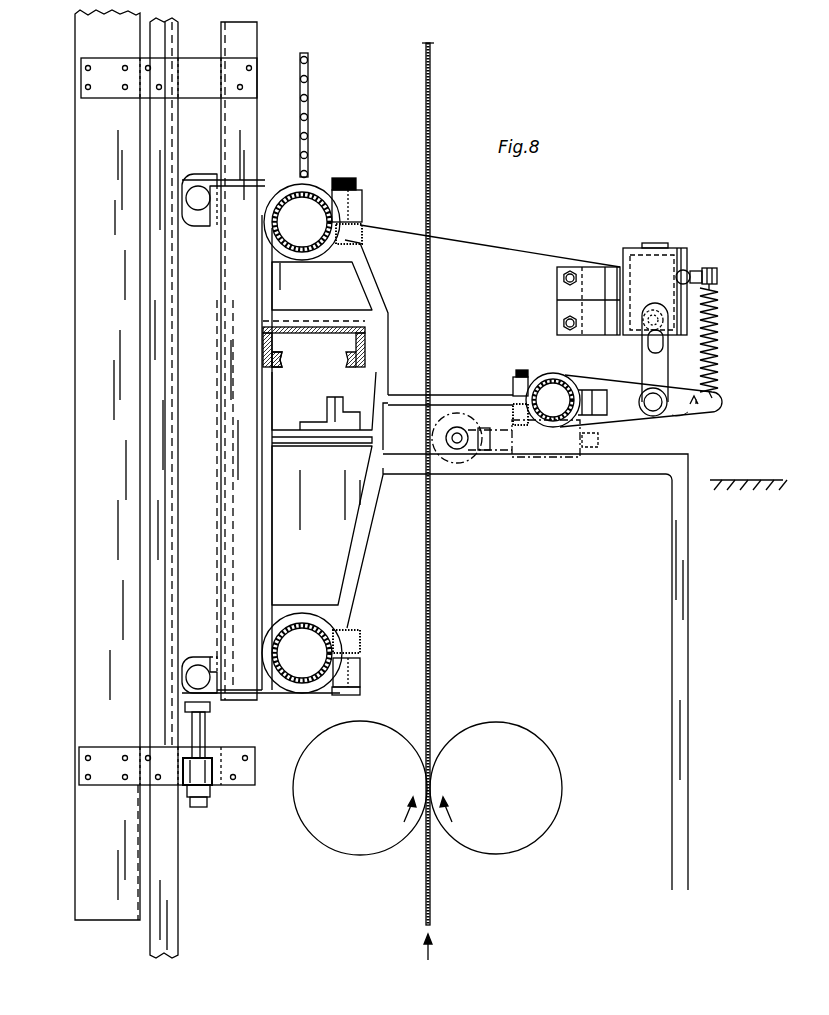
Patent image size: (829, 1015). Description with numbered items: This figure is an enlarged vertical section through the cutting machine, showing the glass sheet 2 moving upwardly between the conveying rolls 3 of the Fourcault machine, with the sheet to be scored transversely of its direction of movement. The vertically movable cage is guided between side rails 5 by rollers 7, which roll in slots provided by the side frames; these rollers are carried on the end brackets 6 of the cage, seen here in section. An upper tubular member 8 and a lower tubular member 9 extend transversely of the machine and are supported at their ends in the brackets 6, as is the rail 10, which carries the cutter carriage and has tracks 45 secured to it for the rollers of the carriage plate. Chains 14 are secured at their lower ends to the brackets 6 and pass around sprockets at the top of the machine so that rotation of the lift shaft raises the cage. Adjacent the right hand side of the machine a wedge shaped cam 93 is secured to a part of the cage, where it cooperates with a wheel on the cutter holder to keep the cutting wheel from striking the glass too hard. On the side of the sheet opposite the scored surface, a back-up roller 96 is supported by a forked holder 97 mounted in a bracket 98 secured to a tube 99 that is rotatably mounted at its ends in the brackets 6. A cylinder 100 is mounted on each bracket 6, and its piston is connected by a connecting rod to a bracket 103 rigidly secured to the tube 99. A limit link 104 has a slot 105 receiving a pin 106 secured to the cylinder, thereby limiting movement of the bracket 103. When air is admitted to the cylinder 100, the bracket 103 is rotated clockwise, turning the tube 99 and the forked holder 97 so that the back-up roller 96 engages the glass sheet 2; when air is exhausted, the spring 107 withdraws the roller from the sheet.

The glass sheet 2 is at (430, 592).
The conveying rolls 3 is at (295, 790).
The side rails 5 is at (170, 140).
The end brackets 6 is at (366, 562).
The rollers 7 is at (204, 182).
The upper tubular member 8 is at (308, 200).
The lower tubular member 9 is at (306, 676).
The rail 10 is at (323, 333).
The chains 14 is at (306, 112).
The tracks 45 is at (278, 367).
The wedge shaped cam 93 is at (327, 402).
The back-up rollers 96 is at (446, 464).
The forked holder 97 is at (490, 455).
The bracket 98 is at (540, 460).
The tube 99 is at (560, 384).
The cylinder 100 is at (677, 252).
The bracket 103 is at (684, 412).
The limit link 104 is at (660, 386).
The slot 105 is at (652, 345).
The pin 106 is at (650, 326).
The spring 107 is at (719, 338).